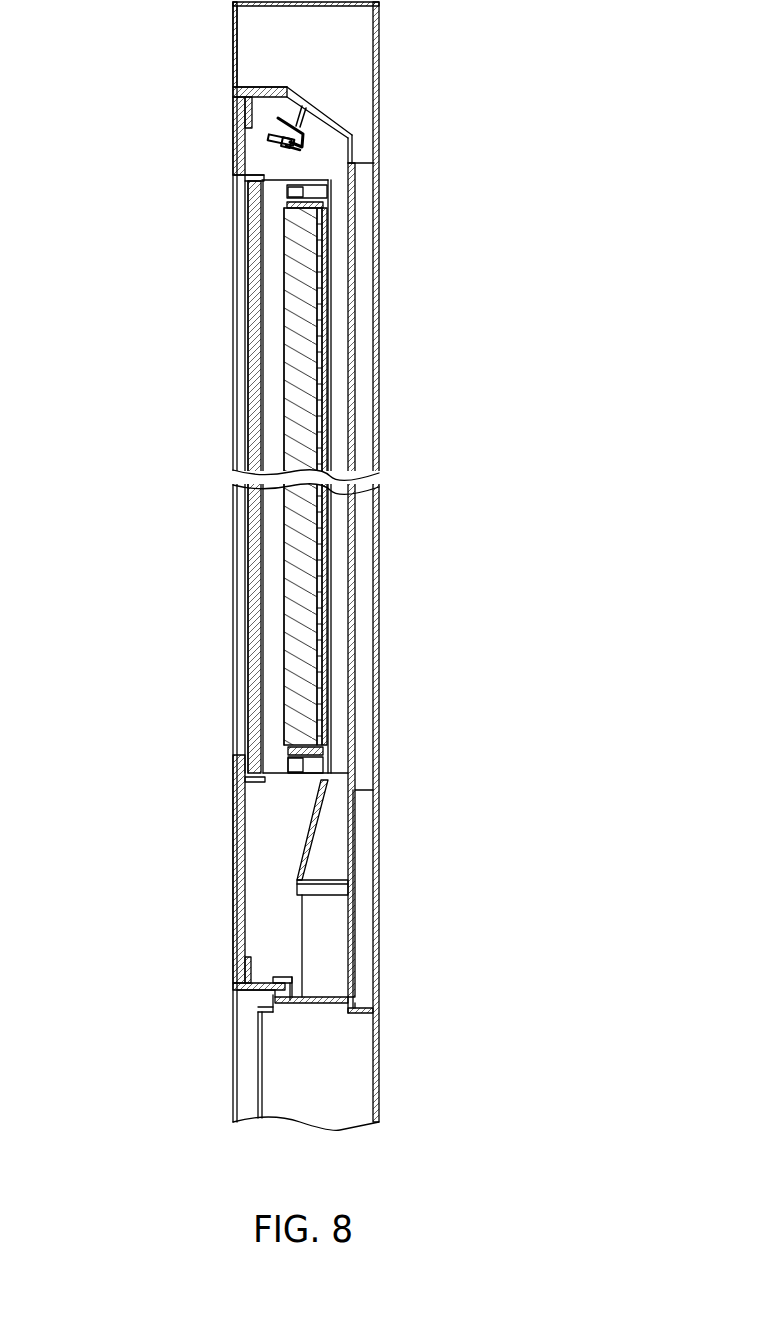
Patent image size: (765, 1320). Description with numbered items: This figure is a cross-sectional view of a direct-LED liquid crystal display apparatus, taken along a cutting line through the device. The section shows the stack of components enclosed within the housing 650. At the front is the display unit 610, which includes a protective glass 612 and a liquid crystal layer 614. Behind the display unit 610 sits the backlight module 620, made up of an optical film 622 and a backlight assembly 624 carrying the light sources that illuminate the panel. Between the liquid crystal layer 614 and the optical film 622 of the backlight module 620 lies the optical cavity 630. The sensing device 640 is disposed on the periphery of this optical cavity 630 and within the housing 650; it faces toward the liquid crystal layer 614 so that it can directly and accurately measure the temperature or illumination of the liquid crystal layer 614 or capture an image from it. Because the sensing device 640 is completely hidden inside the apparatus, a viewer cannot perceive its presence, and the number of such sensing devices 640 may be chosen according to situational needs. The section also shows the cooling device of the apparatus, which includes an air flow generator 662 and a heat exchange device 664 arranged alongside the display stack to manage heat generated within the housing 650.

The housing 650 is at (386, 35).
The sensing device 640 is at (292, 150).
The backlight module 620 is at (212, 476).
The optical film 622 is at (290, 232).
The backlight assembly 624 is at (320, 270).
The optical cavity 630 is at (268, 427).
The heat exchange device 664 is at (340, 323).
The display unit 610 is at (171, 477).
The protective glass 612 is at (246, 573).
The liquid crystal layer 614 is at (252, 612).
The air flow generator 662 is at (325, 927).